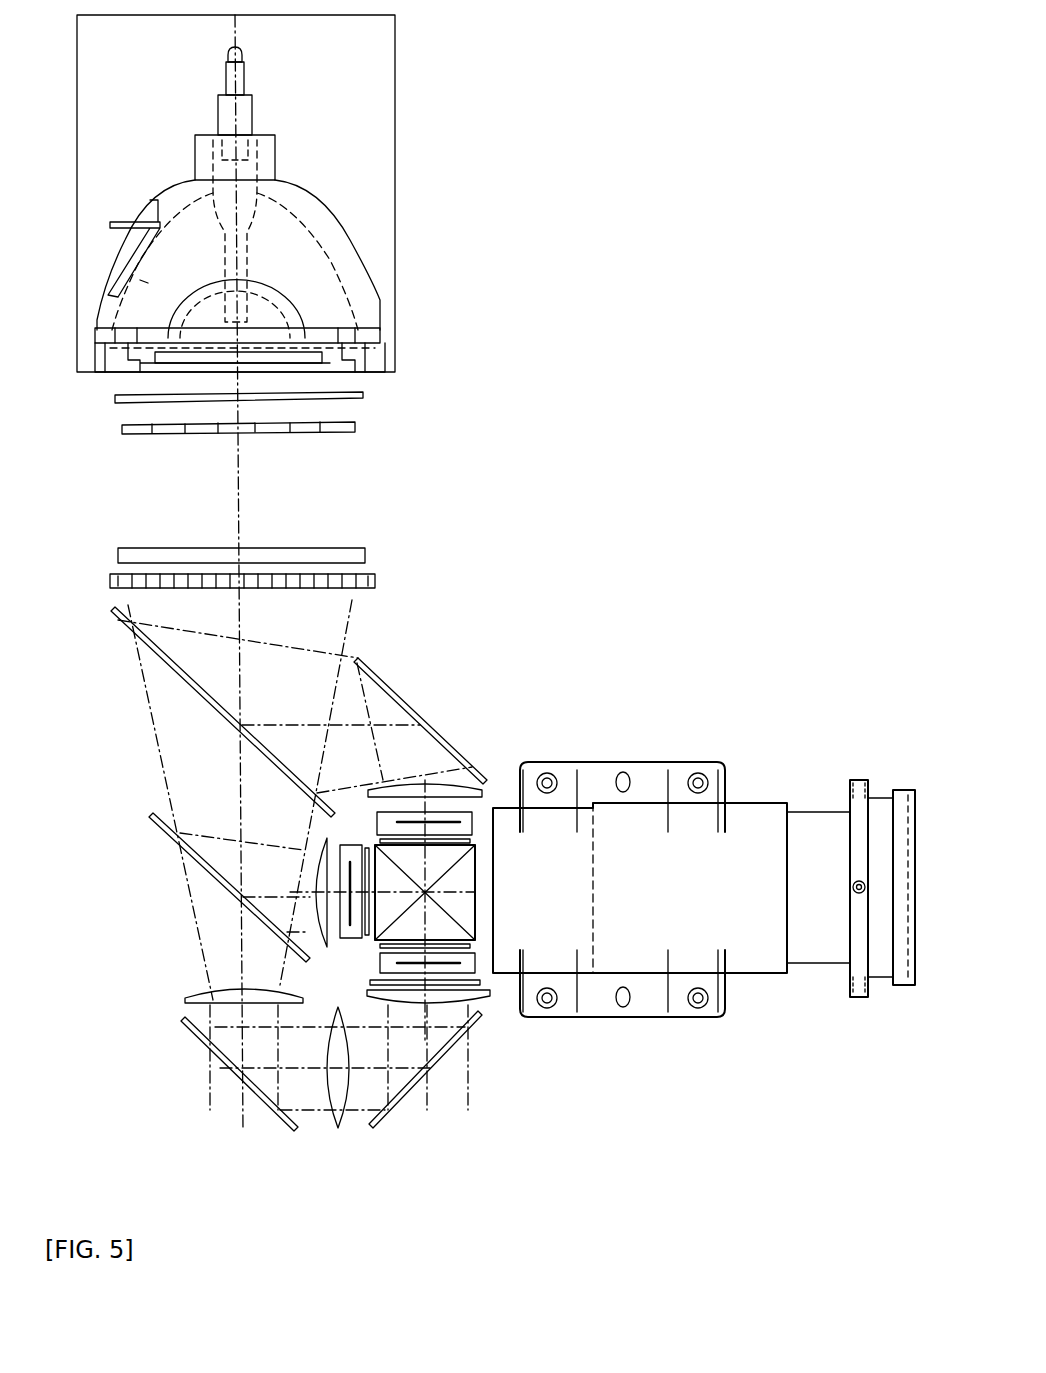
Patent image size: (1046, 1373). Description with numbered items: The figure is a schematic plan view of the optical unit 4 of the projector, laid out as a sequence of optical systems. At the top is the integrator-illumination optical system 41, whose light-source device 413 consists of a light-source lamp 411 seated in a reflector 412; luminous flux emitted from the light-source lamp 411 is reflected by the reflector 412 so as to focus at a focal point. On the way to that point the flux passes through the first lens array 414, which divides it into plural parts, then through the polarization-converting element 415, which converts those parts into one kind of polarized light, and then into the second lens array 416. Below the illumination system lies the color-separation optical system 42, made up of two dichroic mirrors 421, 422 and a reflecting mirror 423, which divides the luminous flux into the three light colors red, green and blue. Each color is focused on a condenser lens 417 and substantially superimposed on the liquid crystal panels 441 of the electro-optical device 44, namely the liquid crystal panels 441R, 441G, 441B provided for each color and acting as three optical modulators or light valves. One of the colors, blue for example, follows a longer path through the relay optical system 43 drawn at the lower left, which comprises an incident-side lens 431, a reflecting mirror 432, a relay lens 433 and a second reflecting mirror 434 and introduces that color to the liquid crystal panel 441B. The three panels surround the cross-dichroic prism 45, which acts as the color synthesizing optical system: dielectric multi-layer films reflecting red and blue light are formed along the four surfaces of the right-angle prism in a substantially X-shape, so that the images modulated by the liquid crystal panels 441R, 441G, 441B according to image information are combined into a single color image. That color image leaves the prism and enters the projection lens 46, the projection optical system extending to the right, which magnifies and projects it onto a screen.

The optical unit 4 is at (611, 332).
The integrator-illumination optical system 41 is at (426, 466).
The light-source lamp 411 is at (255, 250).
The reflector 412 is at (348, 263).
The light-source device 413 is at (477, 168).
The first lens array 414 is at (278, 432).
The polarization-converting element 415 is at (320, 553).
The second lens array 416 is at (340, 588).
The condenser lens 417 is at (443, 787).
The color-separation optical system 42 is at (128, 738).
The dichroic mirror 421 is at (207, 690).
The dichroic mirror 422 is at (153, 820).
The reflecting mirror 423 is at (393, 683).
The relay optical system 43 is at (248, 1109).
The incident-side lens 431 is at (200, 993).
The reflecting mirror 432 is at (193, 1032).
The relay lens 433 is at (338, 1128).
The reflecting mirror 434 is at (413, 1087).
The electro-optical device 44 is at (476, 815).
The liquid crystal panels 441 is at (465, 910).
The liquid crystal panel 441R is at (478, 852).
The liquid crystal panel 441G is at (340, 937).
The liquid crystal panel 441B is at (478, 918).
The cross-dichroic prism 45 is at (472, 888).
The projection lens 46 is at (808, 825).